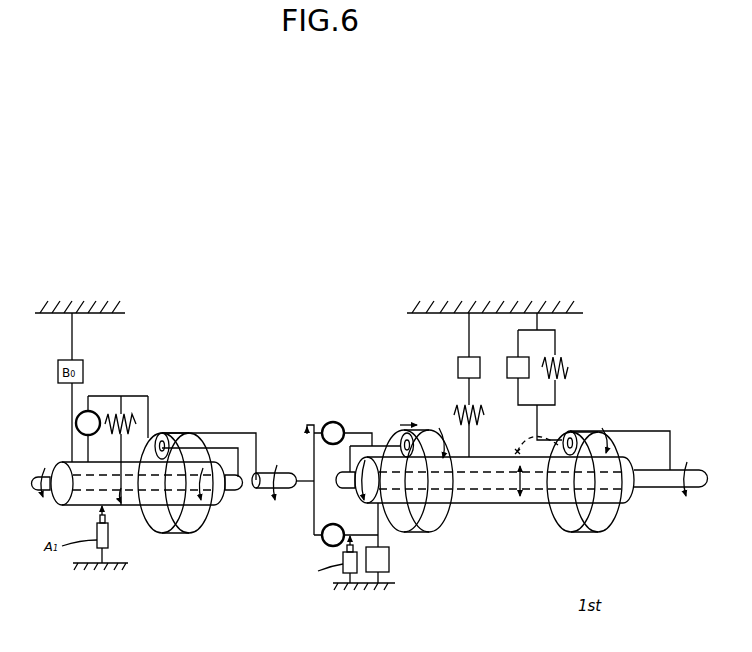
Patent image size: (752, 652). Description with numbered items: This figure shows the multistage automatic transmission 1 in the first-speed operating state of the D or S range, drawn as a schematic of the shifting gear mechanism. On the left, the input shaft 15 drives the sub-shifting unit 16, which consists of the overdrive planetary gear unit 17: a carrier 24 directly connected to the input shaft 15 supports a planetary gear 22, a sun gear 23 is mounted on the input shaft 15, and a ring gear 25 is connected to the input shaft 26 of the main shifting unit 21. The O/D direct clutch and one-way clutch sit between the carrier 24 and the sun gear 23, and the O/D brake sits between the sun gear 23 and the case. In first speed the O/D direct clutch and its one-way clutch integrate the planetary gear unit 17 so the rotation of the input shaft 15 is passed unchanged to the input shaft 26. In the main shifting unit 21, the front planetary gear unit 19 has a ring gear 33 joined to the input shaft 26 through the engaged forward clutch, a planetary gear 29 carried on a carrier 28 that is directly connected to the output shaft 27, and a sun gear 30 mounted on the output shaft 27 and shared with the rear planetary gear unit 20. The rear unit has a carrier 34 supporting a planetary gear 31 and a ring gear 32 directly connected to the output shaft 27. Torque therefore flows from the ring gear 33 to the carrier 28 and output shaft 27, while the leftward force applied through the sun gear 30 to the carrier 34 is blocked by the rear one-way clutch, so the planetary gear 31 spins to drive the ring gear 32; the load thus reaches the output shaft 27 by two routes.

The multistage automatic transmission 1 is at (318, 268).
The input shaft 15 is at (50, 473).
The sub-shifting unit 16 is at (197, 449).
The overdrive planetary gear unit 17 is at (196, 430).
The front planetary gear unit 19 is at (414, 471).
The rear planetary gear unit 20 is at (588, 422).
The main shifting unit 21 is at (464, 448).
The planetary gear 22 is at (166, 434).
The sun gear 23 is at (124, 507).
The carrier 24 is at (150, 395).
The ring gear 25 is at (200, 518).
The input shaft 26 is at (290, 491).
The output shaft 27 is at (667, 488).
The carrier 28 is at (372, 445).
The planetary gear 29 is at (402, 434).
The sun gear 30 is at (507, 504).
The planetary gear 31 is at (570, 432).
The ring gear 32 is at (606, 428).
The ring gear 33 is at (432, 530).
The carrier 34 is at (532, 444).